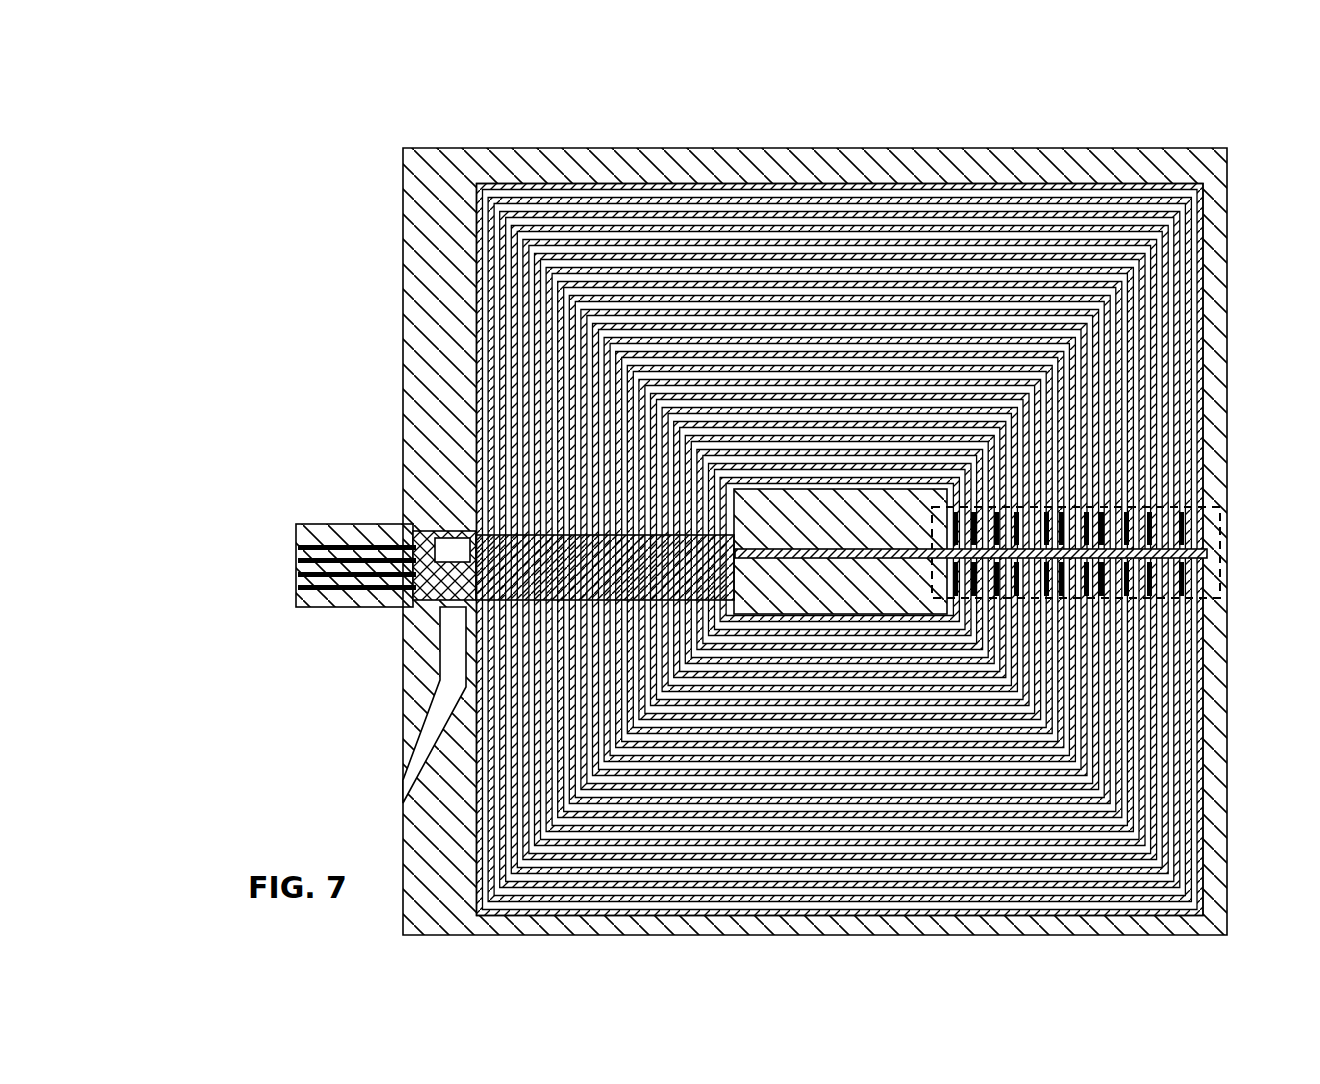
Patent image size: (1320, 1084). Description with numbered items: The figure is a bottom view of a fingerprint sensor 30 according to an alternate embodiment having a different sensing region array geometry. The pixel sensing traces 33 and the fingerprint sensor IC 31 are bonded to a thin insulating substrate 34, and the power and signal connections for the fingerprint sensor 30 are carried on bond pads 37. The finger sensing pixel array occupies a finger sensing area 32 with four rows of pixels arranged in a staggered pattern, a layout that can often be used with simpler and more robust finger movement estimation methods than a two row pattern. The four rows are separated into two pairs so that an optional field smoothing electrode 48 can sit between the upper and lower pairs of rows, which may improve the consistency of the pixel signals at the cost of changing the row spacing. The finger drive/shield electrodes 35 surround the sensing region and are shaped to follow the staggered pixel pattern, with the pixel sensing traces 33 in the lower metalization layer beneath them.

The fingerprint sensor 30 is at (478, 126).
The thin insulating substrate 34 is at (418, 217).
The finger drive/shield electrodes 35 is at (1145, 240).
The bond pads 37 is at (416, 563).
The fingerprint sensor IC 31 is at (447, 610).
The field smoothing electrode 48 is at (1222, 533).
The pixel sensing traces 33 is at (1178, 530).
The finger sensing area 32 is at (1222, 556).